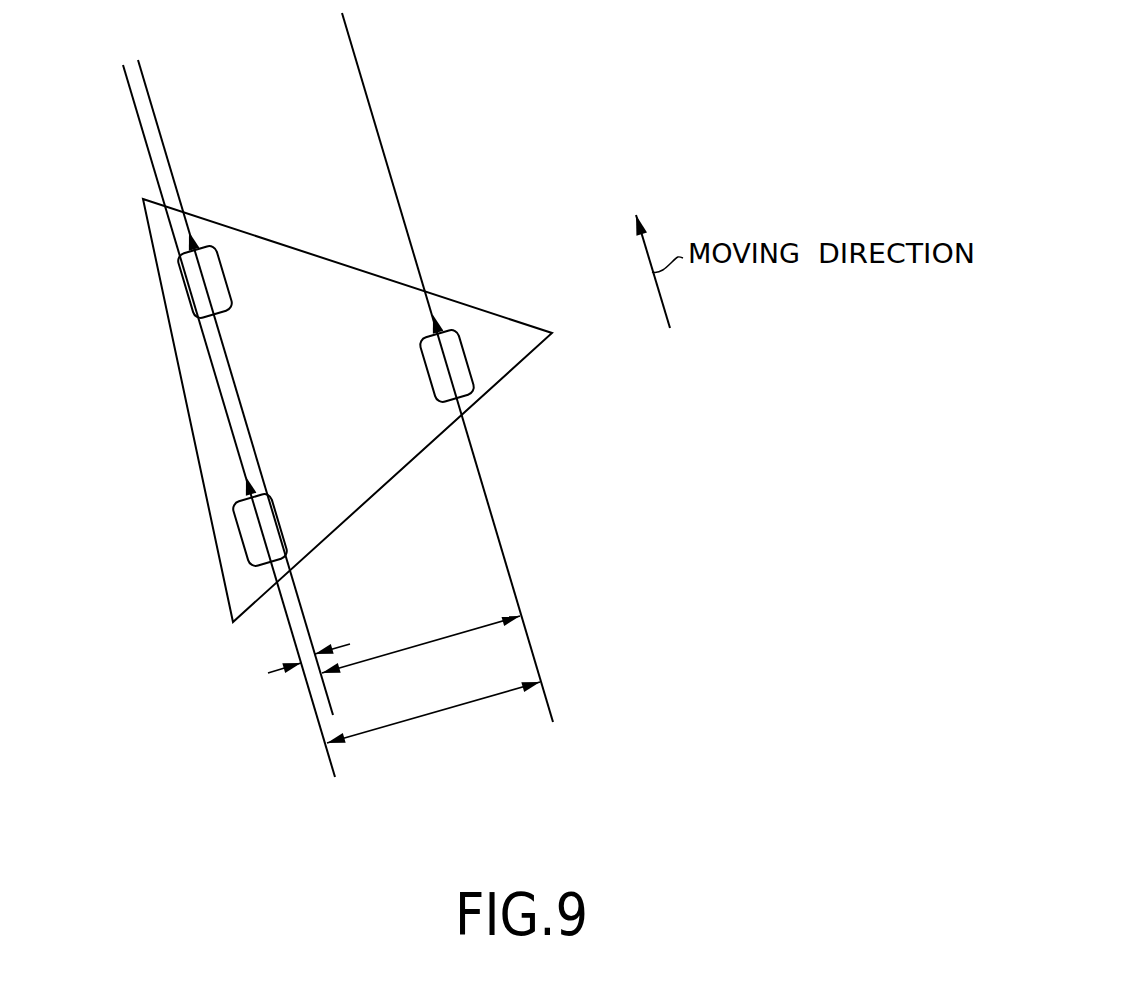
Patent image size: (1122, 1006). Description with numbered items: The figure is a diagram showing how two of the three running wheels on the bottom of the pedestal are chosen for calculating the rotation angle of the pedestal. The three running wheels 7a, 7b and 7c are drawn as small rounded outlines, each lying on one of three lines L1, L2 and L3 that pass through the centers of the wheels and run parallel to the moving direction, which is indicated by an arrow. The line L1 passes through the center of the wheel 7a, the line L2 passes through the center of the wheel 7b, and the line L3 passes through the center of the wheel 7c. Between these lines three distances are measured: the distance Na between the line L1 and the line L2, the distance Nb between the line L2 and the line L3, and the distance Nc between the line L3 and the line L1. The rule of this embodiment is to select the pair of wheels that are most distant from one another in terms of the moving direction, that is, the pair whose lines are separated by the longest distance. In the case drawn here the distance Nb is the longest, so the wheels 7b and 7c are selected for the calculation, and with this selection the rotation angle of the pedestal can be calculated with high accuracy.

The line L1 is at (148, 90).
The line L2 is at (360, 68).
The line L3 is at (128, 83).
The running wheel 7a is at (215, 258).
The running wheel 7b is at (455, 340).
The running wheel 7c is at (237, 523).
The distance Na is at (421, 642).
The distance Nb is at (434, 712).
The distance Nc is at (312, 652).